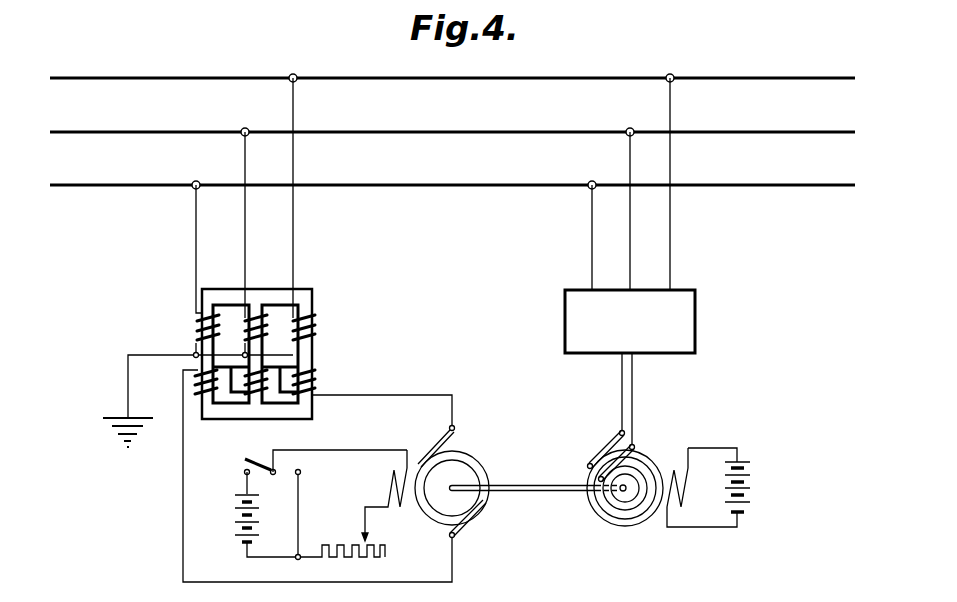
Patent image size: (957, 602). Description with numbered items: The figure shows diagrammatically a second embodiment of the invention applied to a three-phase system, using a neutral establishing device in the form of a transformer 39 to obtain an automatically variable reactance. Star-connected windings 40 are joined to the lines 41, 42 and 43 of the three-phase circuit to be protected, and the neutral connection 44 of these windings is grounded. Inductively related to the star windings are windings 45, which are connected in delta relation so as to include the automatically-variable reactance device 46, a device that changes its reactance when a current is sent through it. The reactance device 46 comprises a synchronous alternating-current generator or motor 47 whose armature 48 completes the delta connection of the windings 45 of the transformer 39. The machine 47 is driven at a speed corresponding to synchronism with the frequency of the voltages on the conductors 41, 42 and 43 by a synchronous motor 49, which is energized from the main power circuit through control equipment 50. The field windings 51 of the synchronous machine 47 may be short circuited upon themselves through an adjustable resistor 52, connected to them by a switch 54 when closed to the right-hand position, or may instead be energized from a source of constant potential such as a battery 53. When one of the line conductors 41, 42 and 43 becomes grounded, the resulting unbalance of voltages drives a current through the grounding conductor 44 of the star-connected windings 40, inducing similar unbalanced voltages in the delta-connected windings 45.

The transformer 39 is at (349, 344).
The star-connected windings 40 is at (197, 323).
The line 41 is at (391, 82).
The line 42 is at (386, 135).
The line 43 is at (386, 188).
The neutral connection 44 is at (172, 358).
The windings 45 is at (196, 378).
The automatically-variable reactance device 46 is at (538, 443).
The synchronous alternating-current generator or motor 47 is at (423, 441).
The armature 48 is at (434, 519).
The synchronous motor 49 is at (642, 551).
The control equipment 50 is at (640, 332).
The field windings 51 is at (388, 486).
The adjustable resistor 52 is at (352, 543).
The battery 53 is at (254, 529).
The switch 54 is at (260, 460).